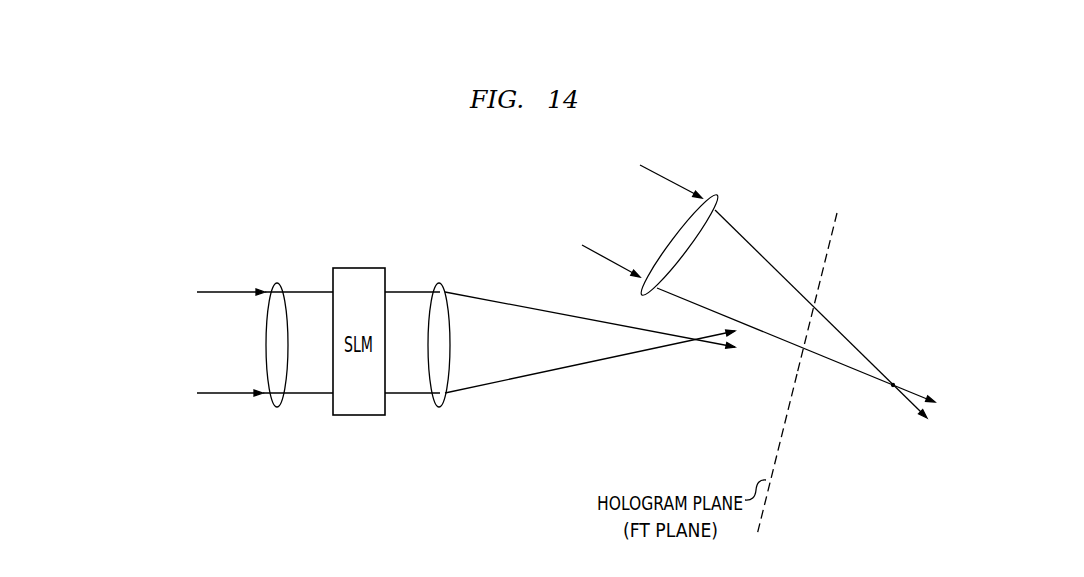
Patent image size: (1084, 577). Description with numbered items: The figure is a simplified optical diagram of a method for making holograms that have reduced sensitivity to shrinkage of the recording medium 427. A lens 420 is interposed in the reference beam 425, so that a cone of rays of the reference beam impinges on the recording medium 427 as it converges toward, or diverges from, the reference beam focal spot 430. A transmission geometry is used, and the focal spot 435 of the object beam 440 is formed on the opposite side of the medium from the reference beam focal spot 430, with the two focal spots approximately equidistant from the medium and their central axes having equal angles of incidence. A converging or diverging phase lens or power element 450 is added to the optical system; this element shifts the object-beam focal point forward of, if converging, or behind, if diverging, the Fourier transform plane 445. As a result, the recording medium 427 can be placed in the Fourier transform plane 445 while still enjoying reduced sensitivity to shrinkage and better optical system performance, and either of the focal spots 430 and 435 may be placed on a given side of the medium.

The lens 420 is at (717, 197).
The reference beam 425 is at (610, 250).
The recording medium 427 is at (790, 390).
The reference beam focal spot 430 is at (890, 388).
The focal spot of object beam 435 is at (693, 340).
The object beam 440 is at (230, 385).
The Fourier transform plane 445 is at (778, 435).
The phase lens or power element 450 is at (285, 283).